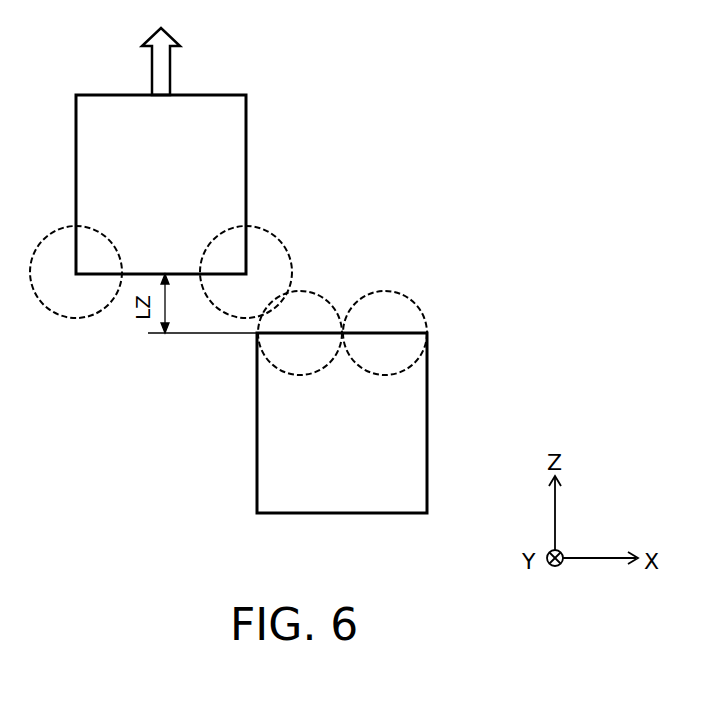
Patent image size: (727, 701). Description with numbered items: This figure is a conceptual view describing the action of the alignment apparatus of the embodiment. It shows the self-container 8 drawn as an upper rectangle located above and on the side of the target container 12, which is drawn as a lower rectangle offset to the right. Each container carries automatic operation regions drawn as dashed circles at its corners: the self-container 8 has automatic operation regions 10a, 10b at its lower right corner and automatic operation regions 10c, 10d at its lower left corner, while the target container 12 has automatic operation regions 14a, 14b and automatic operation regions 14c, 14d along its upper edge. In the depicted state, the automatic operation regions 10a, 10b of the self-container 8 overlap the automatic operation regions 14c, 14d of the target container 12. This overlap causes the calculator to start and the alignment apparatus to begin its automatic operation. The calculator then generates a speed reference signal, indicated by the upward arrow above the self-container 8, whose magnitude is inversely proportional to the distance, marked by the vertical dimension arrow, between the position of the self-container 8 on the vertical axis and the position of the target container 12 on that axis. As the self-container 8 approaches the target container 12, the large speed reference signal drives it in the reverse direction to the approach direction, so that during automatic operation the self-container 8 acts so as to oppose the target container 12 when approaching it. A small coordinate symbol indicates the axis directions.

The self-container 8 is at (220, 133).
The automatic operation region 10a is at (306, 240).
The automatic operation region 10b is at (276, 233).
The automatic operation region 10c is at (76, 316).
The automatic operation region 10d is at (62, 318).
The target container 12 is at (358, 478).
The automatic operation region 14a is at (451, 317).
The automatic operation region 14b is at (420, 310).
The automatic operation region 14c is at (345, 293).
The automatic operation region 14d is at (323, 293).